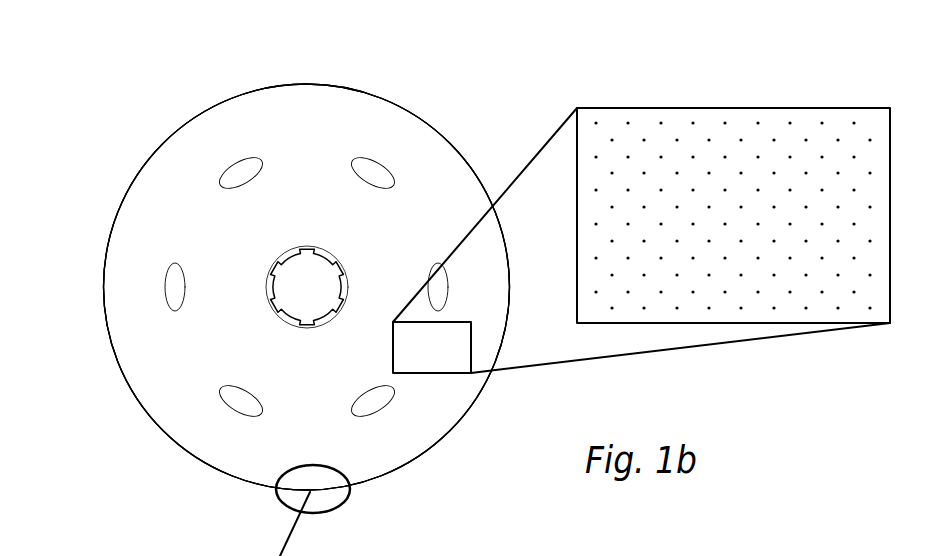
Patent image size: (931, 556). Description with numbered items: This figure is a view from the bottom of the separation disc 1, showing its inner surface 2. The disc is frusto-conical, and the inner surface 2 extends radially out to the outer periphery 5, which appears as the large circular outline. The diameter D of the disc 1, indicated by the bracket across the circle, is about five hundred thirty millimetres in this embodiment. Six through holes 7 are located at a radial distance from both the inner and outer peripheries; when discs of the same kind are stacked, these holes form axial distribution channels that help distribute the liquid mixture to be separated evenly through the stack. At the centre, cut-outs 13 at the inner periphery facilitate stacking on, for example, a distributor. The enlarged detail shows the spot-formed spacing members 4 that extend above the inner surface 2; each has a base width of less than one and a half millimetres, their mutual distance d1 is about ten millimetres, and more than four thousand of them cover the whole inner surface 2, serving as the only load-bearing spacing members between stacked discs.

The separation disc 1 is at (90, 169).
The inner surface 2 is at (127, 347).
The spot-formed spacing members 4 is at (692, 113).
The outer periphery 5 is at (428, 450).
The through holes 7 is at (248, 401).
The cut-outs 13 is at (270, 301).
The diameter D is at (508, 290).
The mutual distance d1 is at (739, 113).